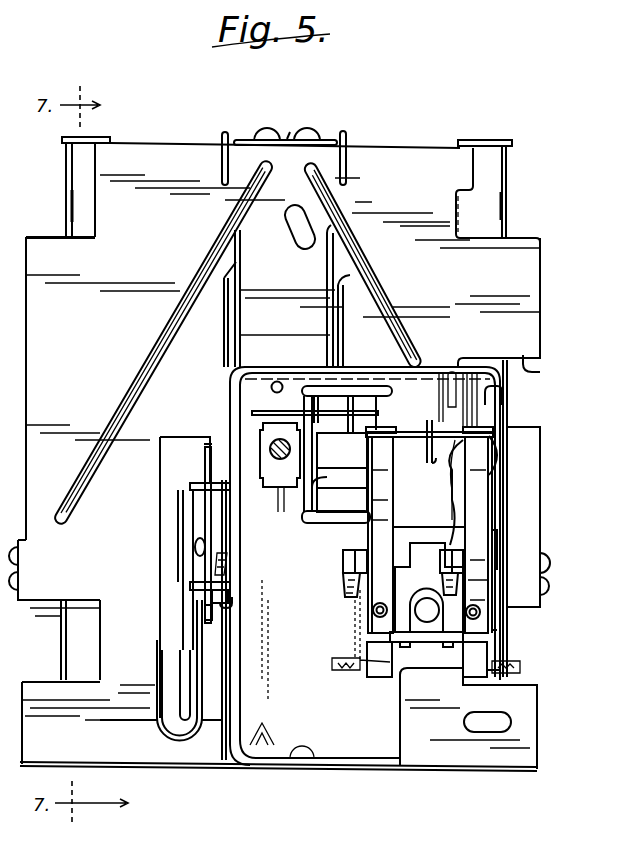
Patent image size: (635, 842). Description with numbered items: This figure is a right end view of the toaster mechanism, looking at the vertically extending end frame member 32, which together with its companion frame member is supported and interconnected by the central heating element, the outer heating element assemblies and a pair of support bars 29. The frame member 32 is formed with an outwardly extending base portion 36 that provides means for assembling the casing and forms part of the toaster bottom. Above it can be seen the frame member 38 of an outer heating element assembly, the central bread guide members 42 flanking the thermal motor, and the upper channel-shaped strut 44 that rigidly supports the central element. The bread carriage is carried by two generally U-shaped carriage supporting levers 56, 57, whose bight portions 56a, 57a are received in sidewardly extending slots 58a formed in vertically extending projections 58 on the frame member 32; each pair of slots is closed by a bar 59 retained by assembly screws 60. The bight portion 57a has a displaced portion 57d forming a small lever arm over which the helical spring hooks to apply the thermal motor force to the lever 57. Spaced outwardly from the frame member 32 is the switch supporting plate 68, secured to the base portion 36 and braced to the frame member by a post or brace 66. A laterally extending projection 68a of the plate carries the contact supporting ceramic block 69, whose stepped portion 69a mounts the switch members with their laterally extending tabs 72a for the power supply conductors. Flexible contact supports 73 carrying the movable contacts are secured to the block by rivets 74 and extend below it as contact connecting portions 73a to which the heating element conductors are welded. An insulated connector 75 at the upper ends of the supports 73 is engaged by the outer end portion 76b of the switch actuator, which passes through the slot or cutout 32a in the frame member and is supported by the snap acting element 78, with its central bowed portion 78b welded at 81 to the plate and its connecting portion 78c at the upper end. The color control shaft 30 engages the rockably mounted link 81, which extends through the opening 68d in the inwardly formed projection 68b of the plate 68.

The support bars 29 is at (548, 571).
The rotatable control shaft 30 is at (278, 462).
The end frame member 32 is at (405, 160).
The slot or cutout 32a is at (536, 371).
The base portion 36 is at (418, 770).
The frame member 38 is at (108, 137).
The central bread guide members 42 is at (224, 134).
The upper channel-shaped strut 44 is at (286, 137).
The carriage supporting lever 56 is at (183, 509).
The bight portion 56a is at (208, 446).
The carriage supporting lever 57 is at (185, 660).
The bight portion 57a is at (232, 584).
The displaced portion 57d is at (230, 600).
The projections 58 is at (203, 466).
The slots 58a is at (188, 486).
The bar 59 is at (213, 614).
The assembly screws 60 is at (196, 550).
The post or brace 66 is at (278, 382).
The switch supporting plate 68 is at (253, 372).
The laterally extending projection 68a is at (438, 650).
The inwardly formed projection 68b is at (352, 397).
The opening 68d is at (316, 480).
The contact supporting ceramic block 69 is at (493, 545).
The stepped portion 69a is at (421, 538).
The laterally extending tab 72a is at (350, 557).
The flexible contact supports 73 is at (380, 494).
The contact connecting portions 73a is at (372, 640).
The rivets 74 is at (372, 611).
The insulated connector 75 is at (414, 443).
The outer end portion 76b is at (427, 421).
The snap acting element 78 is at (500, 478).
The central bowed portion 78b is at (497, 455).
The connecting portion 78c is at (505, 398).
The rockably mounted link 81 is at (342, 472).